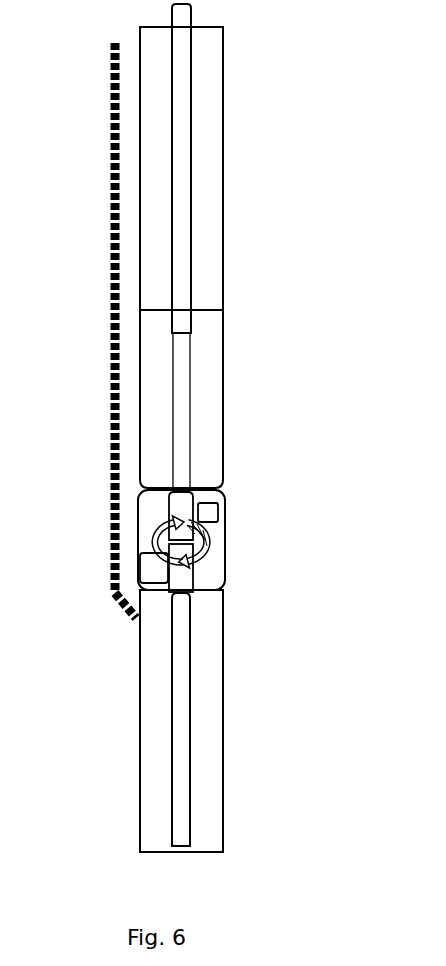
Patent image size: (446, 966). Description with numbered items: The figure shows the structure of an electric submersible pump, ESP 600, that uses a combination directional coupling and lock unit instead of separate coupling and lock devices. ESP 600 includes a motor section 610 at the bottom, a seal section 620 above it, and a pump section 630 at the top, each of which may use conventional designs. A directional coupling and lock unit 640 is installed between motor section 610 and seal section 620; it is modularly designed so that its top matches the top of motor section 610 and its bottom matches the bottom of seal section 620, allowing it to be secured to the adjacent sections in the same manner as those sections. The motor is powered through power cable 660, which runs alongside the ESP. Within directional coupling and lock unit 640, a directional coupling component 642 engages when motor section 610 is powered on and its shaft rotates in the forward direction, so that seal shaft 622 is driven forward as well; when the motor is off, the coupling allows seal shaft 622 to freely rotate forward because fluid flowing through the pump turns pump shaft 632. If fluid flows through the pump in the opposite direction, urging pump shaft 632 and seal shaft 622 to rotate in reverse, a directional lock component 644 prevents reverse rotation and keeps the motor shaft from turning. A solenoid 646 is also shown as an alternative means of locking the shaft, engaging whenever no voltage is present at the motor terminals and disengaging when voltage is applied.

The ESP 600 is at (266, 86).
The motor section 610 is at (223, 683).
The seal section 620 is at (223, 353).
The seal shaft 622 is at (191, 440).
The pump section 630 is at (223, 167).
The pump shaft 632 is at (191, 253).
The directional coupling and lock unit 640 is at (221, 496).
The directional coupling component 642 is at (172, 510).
The directional lock component 644 is at (170, 565).
The solenoid 646 is at (220, 513).
The power cable 660 is at (112, 290).